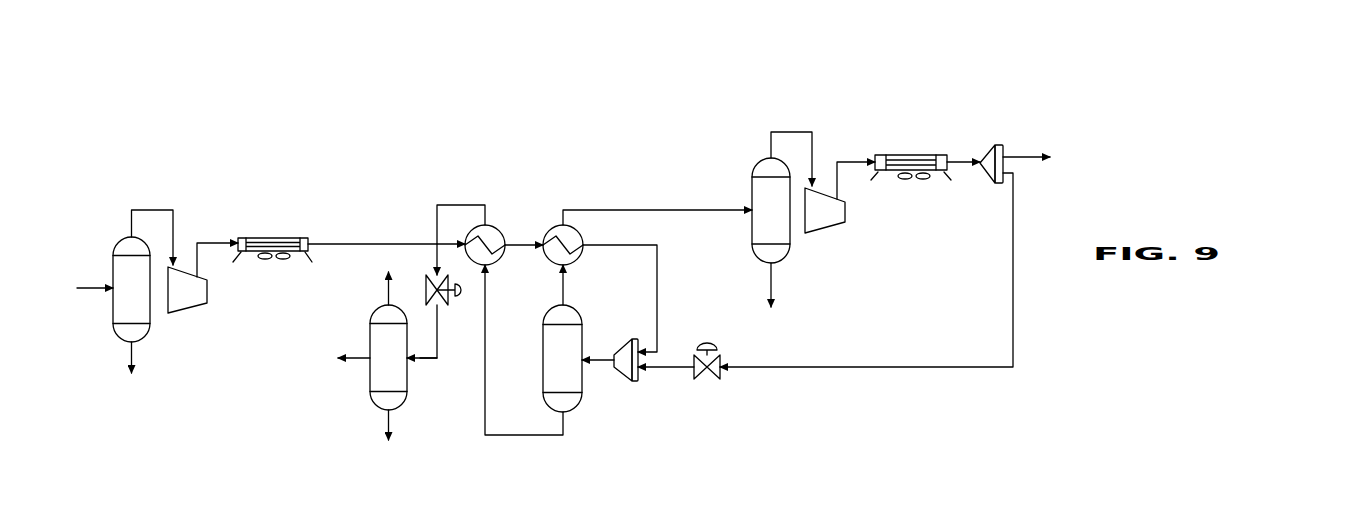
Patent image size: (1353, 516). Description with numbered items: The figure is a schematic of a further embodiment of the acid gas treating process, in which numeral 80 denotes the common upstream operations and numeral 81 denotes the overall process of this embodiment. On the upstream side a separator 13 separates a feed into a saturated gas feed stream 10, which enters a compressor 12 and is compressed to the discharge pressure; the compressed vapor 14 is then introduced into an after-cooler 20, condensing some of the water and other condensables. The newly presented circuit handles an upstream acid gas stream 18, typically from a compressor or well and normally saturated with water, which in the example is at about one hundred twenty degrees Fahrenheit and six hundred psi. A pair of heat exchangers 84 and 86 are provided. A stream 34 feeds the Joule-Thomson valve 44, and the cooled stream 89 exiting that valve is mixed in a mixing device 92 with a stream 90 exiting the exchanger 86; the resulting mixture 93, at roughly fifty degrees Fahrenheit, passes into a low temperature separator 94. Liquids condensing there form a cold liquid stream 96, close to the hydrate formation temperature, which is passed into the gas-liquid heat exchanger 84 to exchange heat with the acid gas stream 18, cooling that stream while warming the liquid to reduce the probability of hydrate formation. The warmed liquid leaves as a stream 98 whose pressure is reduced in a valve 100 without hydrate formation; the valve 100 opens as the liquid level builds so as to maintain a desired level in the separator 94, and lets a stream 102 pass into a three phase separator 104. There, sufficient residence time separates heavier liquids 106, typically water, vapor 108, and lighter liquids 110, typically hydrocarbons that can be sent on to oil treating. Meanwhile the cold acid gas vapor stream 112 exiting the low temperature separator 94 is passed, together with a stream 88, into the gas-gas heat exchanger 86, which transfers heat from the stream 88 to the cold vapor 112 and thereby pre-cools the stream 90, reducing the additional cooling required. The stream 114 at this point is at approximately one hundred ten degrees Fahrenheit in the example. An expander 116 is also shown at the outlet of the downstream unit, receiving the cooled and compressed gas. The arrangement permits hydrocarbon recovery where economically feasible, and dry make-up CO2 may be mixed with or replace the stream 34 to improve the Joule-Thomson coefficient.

The saturated gas feed stream 10 is at (157, 210).
The compressor 12 is at (200, 306).
The separator 13 is at (122, 322).
The compressed vapor 14 is at (197, 243).
The upstream acid gas stream 18 is at (335, 244).
The after-cooler 20 is at (297, 238).
The stream 34 is at (942, 367).
The Joule-Thomson valve 44 is at (700, 380).
The common upstream operations 80 is at (105, 190).
The overall schematic process 81 is at (537, 95).
The gas-liquid heat exchanger 84 is at (491, 227).
The gas-gas heat exchanger 86 is at (569, 227).
The stream 88 is at (512, 238).
The cooled stream 89 is at (660, 368).
The stream 90 is at (660, 300).
The mixing device 92 is at (625, 340).
The mixture 93 is at (587, 358).
The low temperature separator 94 is at (581, 398).
The cold liquid stream 96 is at (522, 435).
The stream 98 is at (457, 205).
The valve 100 is at (463, 298).
The stream 102 is at (425, 360).
The three phase separator 104 is at (396, 400).
The heavier liquids 106 is at (385, 428).
The vapor 108 is at (385, 279).
The lighter liquids 110 is at (358, 362).
The cold acid gas vapor stream 112 is at (561, 291).
The stream 114 is at (643, 209).
The expander 116 is at (1015, 120).